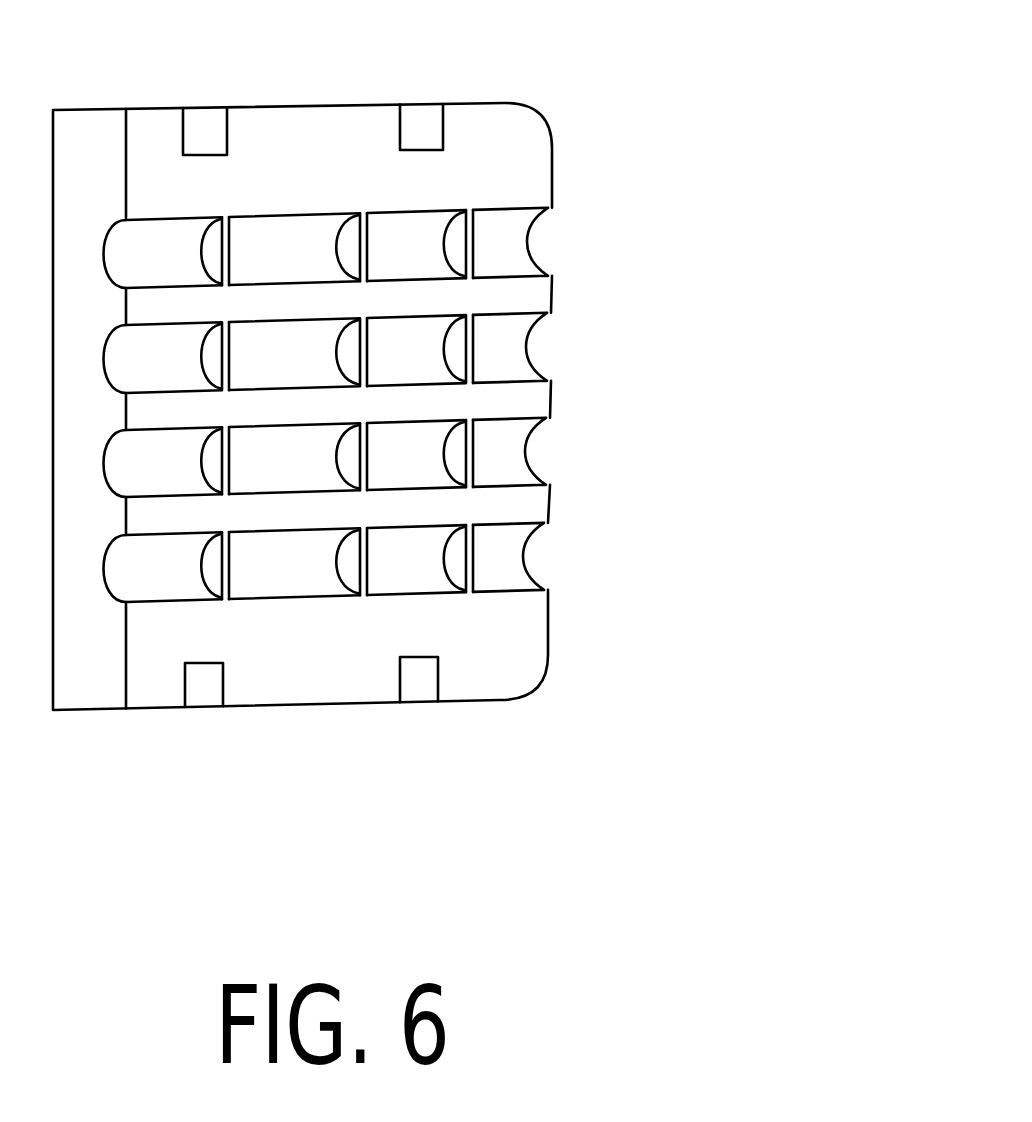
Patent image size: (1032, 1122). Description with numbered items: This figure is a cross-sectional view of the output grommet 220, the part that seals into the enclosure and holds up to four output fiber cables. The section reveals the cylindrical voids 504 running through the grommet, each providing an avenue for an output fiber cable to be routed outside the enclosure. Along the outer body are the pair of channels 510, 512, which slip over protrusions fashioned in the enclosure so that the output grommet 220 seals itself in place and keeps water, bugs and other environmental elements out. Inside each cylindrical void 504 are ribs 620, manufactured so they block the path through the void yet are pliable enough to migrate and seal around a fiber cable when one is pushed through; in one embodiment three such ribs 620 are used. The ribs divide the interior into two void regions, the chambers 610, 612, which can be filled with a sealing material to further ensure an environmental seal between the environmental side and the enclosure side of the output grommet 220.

The output grommet 220 is at (782, 100).
The cylindrical void 504 is at (592, 540).
The channel 510 is at (417, 675).
The channel 512 is at (197, 683).
The chamber 610 is at (280, 358).
The chamber 612 is at (402, 357).
The rib 620 is at (457, 217).